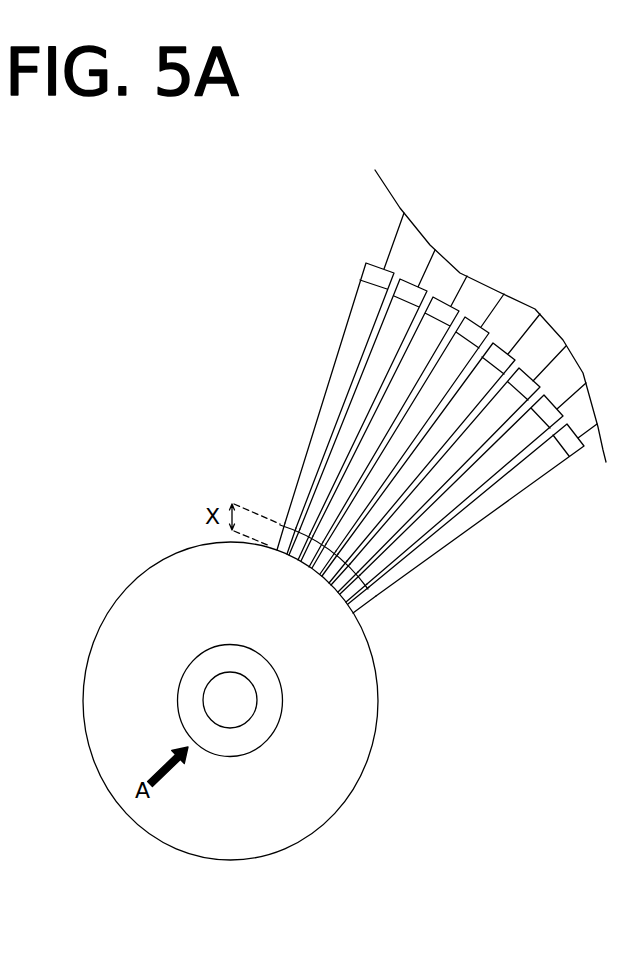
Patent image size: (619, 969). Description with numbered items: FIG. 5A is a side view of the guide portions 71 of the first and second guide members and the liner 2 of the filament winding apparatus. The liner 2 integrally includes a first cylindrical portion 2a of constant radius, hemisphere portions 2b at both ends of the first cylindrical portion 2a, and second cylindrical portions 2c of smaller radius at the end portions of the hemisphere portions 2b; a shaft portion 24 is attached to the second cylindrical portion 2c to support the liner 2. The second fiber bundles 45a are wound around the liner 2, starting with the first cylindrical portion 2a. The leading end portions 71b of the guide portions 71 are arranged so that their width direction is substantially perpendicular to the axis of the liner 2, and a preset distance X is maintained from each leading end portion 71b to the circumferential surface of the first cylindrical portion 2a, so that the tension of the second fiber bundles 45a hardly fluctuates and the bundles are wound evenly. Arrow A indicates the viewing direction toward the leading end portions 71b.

The liner 2 is at (279, 705).
The first cylindrical portion 2a is at (372, 752).
The hemisphere portion 2b is at (315, 755).
The second cylindrical portion 2c is at (257, 750).
The shaft portion 24 is at (228, 690).
The second fiber bundle 45a is at (388, 240).
The guide portion 71 is at (465, 525).
The leading end portion 71b is at (367, 590).